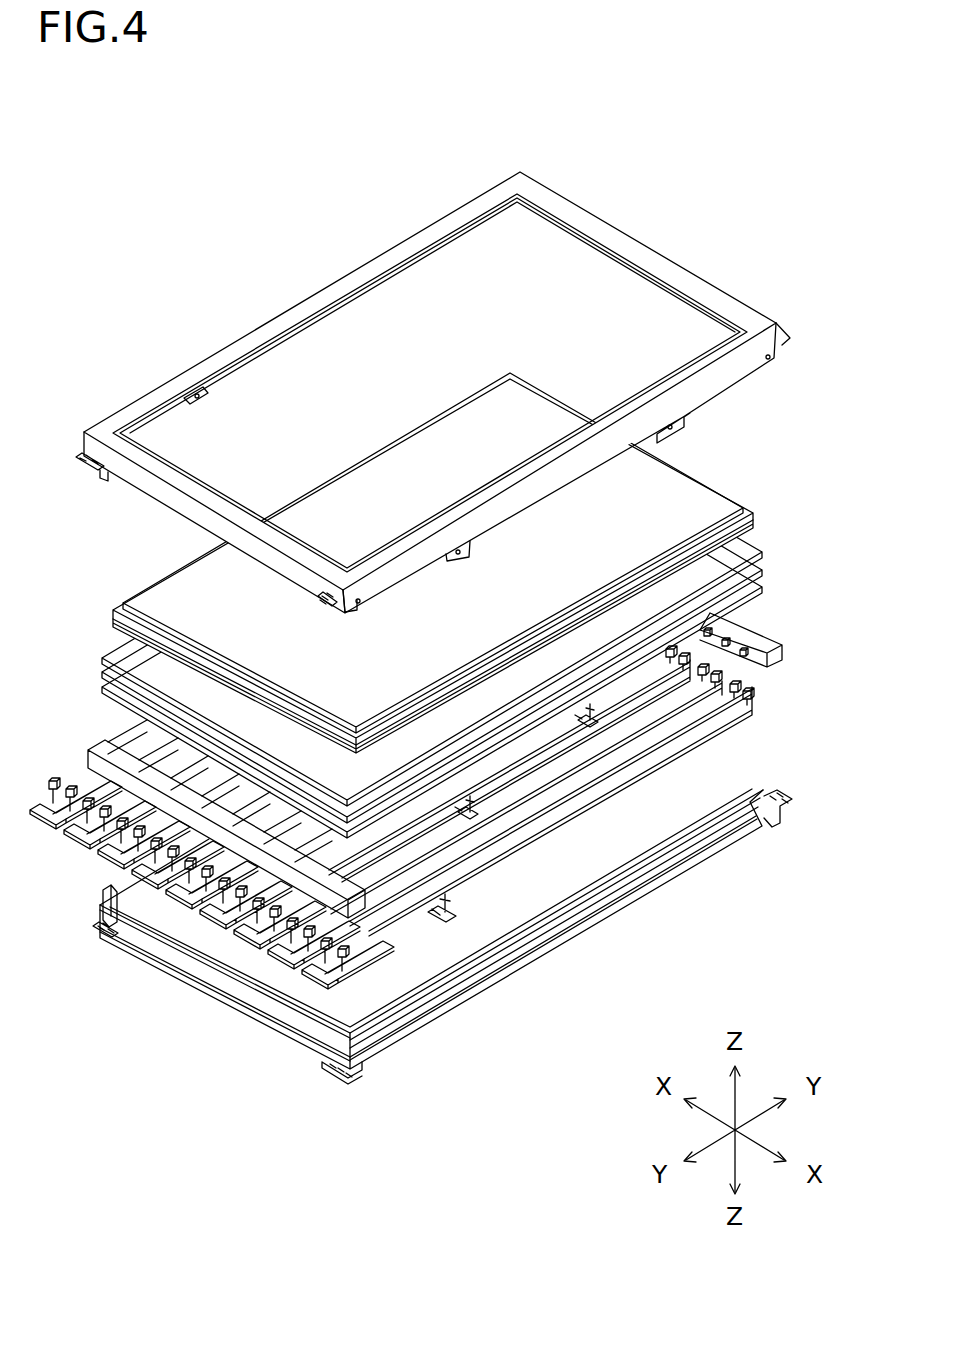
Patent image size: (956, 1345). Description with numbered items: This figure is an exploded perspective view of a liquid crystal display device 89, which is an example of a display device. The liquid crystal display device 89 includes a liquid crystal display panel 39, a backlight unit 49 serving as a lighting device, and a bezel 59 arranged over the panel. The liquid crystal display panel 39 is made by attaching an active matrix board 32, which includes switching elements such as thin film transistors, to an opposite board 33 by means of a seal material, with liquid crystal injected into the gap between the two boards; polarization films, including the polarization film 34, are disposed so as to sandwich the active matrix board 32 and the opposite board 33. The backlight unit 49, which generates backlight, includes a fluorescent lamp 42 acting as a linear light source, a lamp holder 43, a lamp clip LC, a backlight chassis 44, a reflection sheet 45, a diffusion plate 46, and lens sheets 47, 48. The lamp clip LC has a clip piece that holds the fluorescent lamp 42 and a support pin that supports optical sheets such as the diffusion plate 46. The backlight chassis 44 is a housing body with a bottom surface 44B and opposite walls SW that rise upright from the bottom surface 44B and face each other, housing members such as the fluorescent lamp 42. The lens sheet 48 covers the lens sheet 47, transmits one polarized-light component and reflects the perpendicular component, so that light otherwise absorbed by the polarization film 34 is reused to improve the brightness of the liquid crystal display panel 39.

The liquid crystal display device 89 is at (190, 268).
The bezel 59 is at (780, 327).
The liquid crystal display panel 39 is at (800, 443).
The polarization film 34 is at (738, 500).
The opposite board 33 is at (745, 512).
The active matrix board 32 is at (751, 520).
The backlight unit 49 is at (800, 548).
The lens sheet 48 is at (760, 556).
The lens sheet 47 is at (760, 575).
The diffusion plate 46 is at (745, 596).
The lamp holder 43 is at (768, 668).
The fluorescent lamp 42 is at (705, 732).
The reflection sheet 45 is at (762, 788).
The backlight chassis 44 is at (735, 846).
The bottom surface 44B is at (262, 997).
The wall SW is at (102, 895).
The lamp clip LC is at (458, 895).